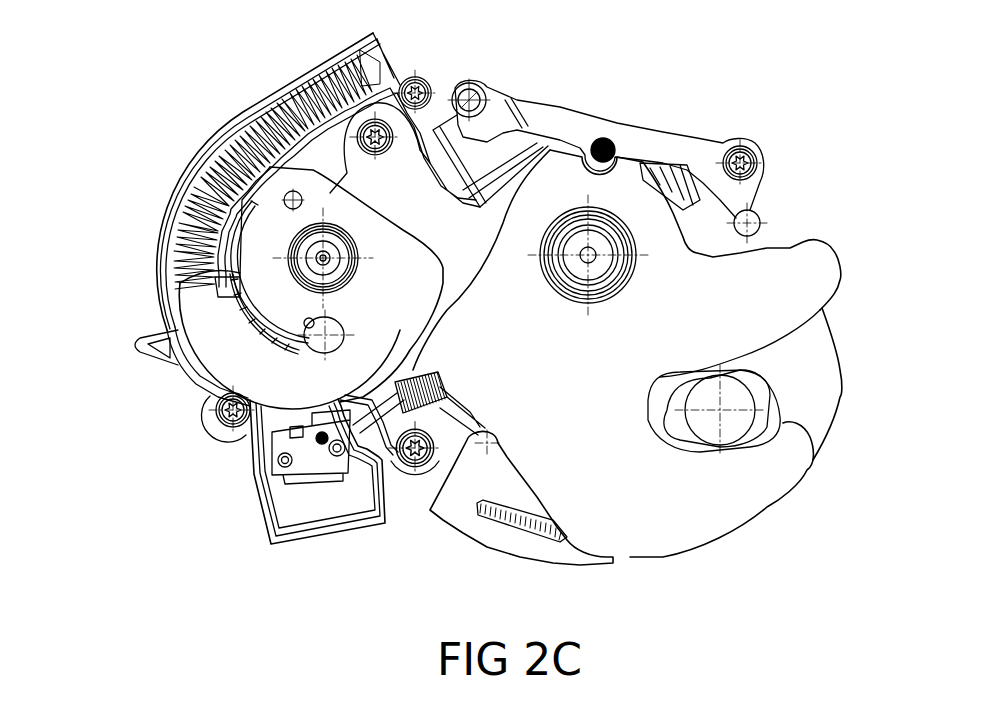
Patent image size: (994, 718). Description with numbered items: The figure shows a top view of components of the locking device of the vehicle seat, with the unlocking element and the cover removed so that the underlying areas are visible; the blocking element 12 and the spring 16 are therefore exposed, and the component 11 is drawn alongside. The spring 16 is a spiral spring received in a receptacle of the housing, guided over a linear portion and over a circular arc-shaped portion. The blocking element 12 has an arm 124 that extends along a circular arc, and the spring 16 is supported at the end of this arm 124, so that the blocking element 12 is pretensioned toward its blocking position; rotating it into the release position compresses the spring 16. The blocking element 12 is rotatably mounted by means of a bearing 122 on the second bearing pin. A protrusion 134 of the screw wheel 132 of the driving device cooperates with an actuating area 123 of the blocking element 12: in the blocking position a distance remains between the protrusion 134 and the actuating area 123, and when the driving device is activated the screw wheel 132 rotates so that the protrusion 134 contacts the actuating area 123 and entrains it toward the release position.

The body 11 is at (650, 530).
The blocking element 12 is at (371, 209).
The spring 16 is at (230, 147).
The bearing 122 is at (350, 283).
The actuating area 123 is at (267, 183).
The arm 124 is at (233, 343).
The screw wheel 132 is at (253, 293).
The protrusion 134 is at (242, 248).